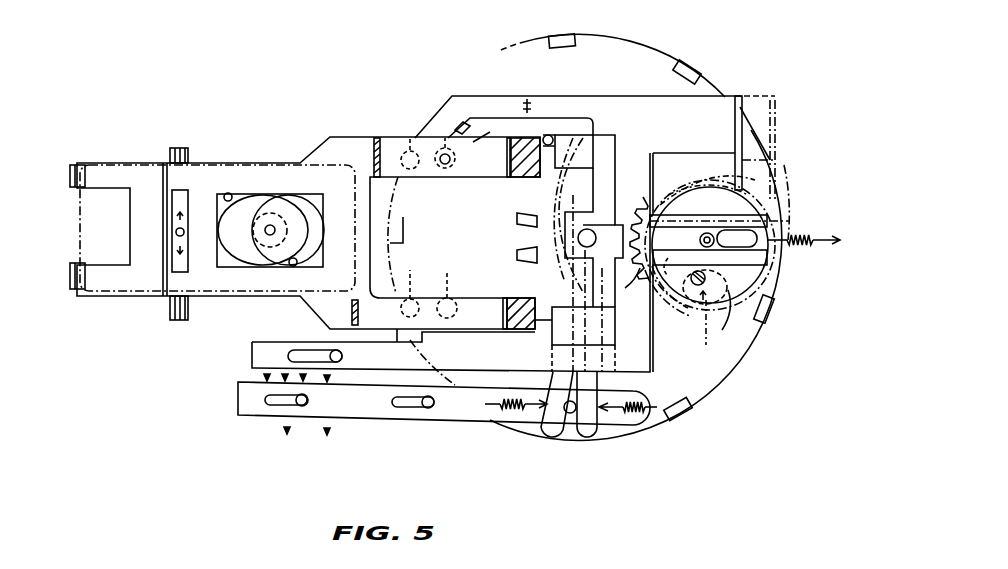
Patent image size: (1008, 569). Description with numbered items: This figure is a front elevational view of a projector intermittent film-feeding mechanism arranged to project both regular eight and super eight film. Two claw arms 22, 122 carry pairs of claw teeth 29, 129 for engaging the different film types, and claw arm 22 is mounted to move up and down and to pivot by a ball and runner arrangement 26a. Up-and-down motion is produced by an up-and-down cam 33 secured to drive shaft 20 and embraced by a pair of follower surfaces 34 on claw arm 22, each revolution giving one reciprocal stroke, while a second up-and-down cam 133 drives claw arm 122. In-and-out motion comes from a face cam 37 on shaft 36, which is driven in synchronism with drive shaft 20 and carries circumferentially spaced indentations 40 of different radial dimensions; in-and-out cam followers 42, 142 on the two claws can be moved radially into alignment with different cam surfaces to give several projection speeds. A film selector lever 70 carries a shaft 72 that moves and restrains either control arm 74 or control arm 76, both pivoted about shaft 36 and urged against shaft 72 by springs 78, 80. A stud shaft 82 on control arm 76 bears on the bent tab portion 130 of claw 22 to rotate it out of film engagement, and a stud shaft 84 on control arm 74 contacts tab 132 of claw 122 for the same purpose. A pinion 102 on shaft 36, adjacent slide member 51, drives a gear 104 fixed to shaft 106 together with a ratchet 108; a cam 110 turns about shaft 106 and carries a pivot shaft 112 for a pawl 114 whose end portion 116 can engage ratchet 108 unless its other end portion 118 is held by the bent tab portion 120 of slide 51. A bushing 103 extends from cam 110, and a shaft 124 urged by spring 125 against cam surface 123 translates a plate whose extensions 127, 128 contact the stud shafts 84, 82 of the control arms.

The drive shaft 20 is at (270, 225).
The claw arm 22 is at (118, 172).
The ball and runner arrangement 26a is at (187, 146).
The claw teeth 29 is at (90, 192).
The up-and-down cam 33 is at (308, 239).
The follower surfaces 34 is at (229, 194).
The shaft 36 is at (581, 243).
The face cam 37 is at (500, 75).
The indentations 40 is at (560, 40).
The in-and-out cam follower 42 is at (443, 153).
The slide member 51 is at (648, 113).
The film selector lever 70 is at (378, 418).
The shaft 72 is at (572, 415).
The control arm 74 is at (546, 426).
The control arm 76 is at (590, 430).
The spring 78 is at (490, 408).
The spring 80 is at (640, 420).
The stud shaft 82 is at (548, 134).
The stud shaft 84 is at (530, 334).
The pinion 102 is at (641, 210).
The bushing 103 is at (746, 262).
The gear 104 is at (636, 270).
The shaft 106 is at (717, 246).
The ratchet 108 is at (771, 223).
The cam 110 is at (722, 332).
The pivot shaft 112 is at (672, 304).
The pawl 114 is at (706, 322).
The end portion 116 is at (714, 303).
The end portion 118 is at (782, 210).
The bent tab portion 120 is at (770, 127).
The claw arm 122 is at (116, 280).
The cam surface 123 is at (694, 180).
The shaft 124 is at (668, 270).
The spring 125 is at (822, 240).
The extension 127 is at (568, 308).
The extension 128 is at (570, 168).
The claw teeth 129 is at (75, 187).
The bent tab portion 130 is at (524, 165).
The tab 132 is at (525, 300).
The up-and-down cam 133 is at (240, 250).
The in-and-out cam follower 142 is at (448, 297).